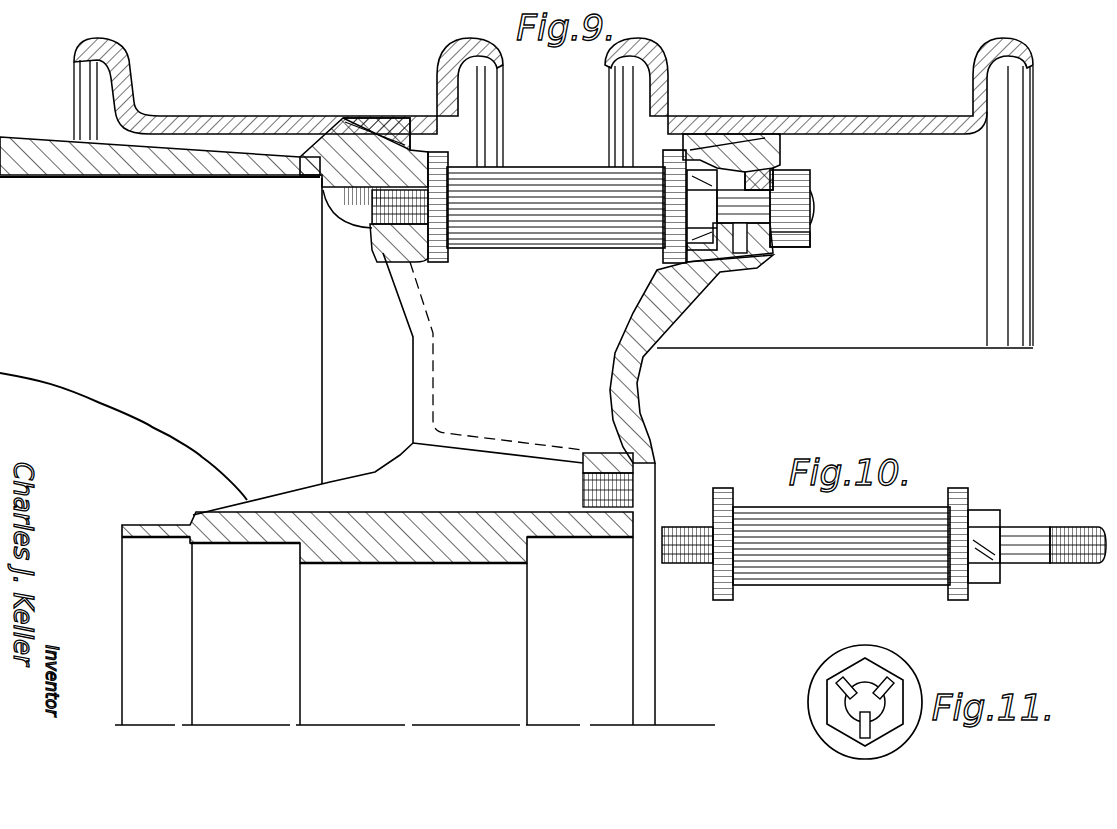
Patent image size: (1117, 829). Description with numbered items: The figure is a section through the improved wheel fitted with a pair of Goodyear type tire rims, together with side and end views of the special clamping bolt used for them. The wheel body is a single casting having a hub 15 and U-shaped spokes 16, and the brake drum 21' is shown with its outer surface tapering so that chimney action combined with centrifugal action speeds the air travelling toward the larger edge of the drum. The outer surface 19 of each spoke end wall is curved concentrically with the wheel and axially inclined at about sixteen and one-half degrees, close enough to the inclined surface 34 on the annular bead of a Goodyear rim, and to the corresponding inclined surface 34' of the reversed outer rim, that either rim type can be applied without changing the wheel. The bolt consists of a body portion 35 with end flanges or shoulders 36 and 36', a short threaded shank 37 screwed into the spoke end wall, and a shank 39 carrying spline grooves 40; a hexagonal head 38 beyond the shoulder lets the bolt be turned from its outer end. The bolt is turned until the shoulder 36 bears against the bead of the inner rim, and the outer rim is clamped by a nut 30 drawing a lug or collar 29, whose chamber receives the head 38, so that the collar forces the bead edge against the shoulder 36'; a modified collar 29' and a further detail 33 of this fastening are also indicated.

In FIG. 9, the hub 15 is at (430, 544).
In FIG. 9, the spokes 16 is at (623, 384).
In FIG. 9, the outer peripheral surface of end wall 19 is at (362, 162).
In FIG. 9, the brake drum 21' is at (160, 179).
In FIG. 9, the lug or collar 29 is at (746, 259).
In FIG. 9, the clamping wedge 29' is at (793, 162).
In FIG. 9, the nut 30 is at (794, 243).
In FIG. 9, the locking pin 33 is at (741, 254).
In FIG. 9, the inclined surface portion 34 is at (362, 106).
In FIG. 9, the wedge 34' is at (731, 129).
In FIG. 9, the body portion 35 is at (557, 248).
In FIG. 10, the body portion 35 is at (841, 546).
In FIG. 9, the end flange or shoulder 36 is at (459, 228).
In FIG. 10, the end flange or shoulder 36 is at (730, 524).
In FIG. 9, the end flange or shoulder 36' is at (644, 227).
In FIG. 10, the end flange or shoulder 36' is at (966, 524).
In FIG. 11, the end flange or shoulder 36' is at (892, 700).
In FIG. 9, the short threaded shank 37 is at (390, 196).
In FIG. 10, the short threaded shank 37 is at (693, 560).
In FIG. 9, the hexagonal head 38 is at (712, 252).
In FIG. 10, the hexagonal head 38 is at (982, 518).
In FIG. 11, the hexagonal head 38 is at (868, 662).
In FIG. 9, the shank 39 is at (817, 198).
In FIG. 10, the shank 39 is at (1031, 527).
In FIG. 11, the shank 39 is at (880, 712).
In FIG. 10, the spline grooves 40 is at (1073, 530).
In FIG. 11, the spline grooves 40 is at (855, 716).